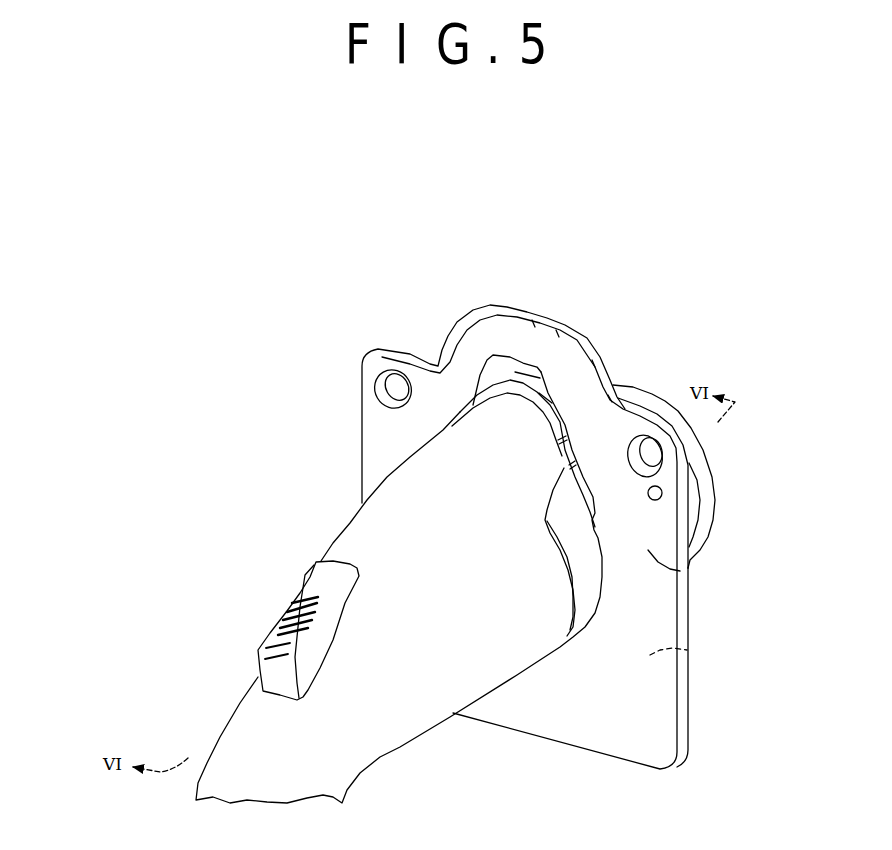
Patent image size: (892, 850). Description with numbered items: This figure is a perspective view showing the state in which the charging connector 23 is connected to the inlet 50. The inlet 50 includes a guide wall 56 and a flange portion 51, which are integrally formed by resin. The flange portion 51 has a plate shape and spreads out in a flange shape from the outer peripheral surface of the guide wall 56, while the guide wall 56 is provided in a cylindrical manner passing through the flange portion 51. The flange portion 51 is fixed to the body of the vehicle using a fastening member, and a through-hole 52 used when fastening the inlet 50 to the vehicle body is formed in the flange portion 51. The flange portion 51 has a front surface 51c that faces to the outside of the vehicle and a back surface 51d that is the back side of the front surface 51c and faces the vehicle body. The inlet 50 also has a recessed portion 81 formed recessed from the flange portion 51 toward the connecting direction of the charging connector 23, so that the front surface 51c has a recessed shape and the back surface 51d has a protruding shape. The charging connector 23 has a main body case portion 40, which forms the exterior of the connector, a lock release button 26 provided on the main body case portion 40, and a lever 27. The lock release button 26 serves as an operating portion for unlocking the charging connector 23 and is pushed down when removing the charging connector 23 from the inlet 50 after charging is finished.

The inlet 50 is at (418, 341).
The flange portion 51 is at (603, 433).
The through-hole 52 is at (662, 460).
The front surface 51c is at (680, 571).
The back surface 51d is at (687, 650).
The main body case portion 40 is at (417, 687).
The lever 27 is at (540, 392).
The recessed portion 81 is at (518, 370).
The guide wall 56 is at (585, 583).
The charging connector 23 is at (310, 557).
The lock release button 26 is at (287, 610).